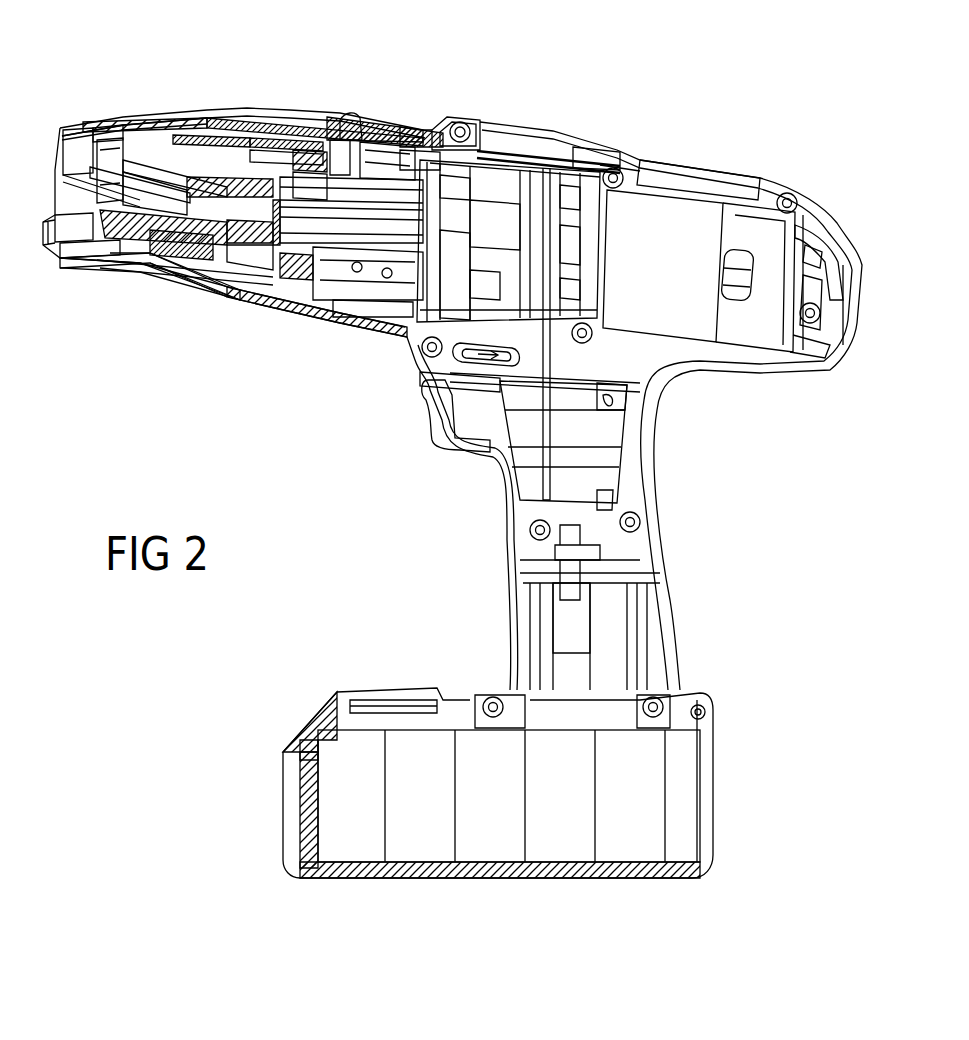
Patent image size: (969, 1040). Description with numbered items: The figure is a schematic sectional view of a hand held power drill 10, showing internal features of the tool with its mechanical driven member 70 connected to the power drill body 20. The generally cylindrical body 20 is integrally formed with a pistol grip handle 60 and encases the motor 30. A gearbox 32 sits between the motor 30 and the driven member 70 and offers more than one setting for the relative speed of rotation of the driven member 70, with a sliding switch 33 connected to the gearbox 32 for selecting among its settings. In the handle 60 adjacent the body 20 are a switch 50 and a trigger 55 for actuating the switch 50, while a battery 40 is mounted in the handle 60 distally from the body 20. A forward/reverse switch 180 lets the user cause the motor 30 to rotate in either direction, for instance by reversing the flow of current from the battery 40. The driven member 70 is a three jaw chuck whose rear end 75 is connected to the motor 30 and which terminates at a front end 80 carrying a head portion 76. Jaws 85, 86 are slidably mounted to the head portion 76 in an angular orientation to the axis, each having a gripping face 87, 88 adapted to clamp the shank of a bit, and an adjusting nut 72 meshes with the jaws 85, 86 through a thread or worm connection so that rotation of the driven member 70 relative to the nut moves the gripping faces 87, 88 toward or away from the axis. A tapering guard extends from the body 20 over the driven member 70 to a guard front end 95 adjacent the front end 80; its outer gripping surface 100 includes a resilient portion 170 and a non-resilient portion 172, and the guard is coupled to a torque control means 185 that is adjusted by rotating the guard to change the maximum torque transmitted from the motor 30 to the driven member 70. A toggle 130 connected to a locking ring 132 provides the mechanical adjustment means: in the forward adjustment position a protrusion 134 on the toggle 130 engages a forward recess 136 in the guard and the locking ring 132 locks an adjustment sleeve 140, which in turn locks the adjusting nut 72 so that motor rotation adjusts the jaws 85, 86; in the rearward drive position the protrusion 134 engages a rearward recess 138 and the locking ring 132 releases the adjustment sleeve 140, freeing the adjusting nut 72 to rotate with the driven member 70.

The power drill 10 is at (742, 130).
The power drill body 20 is at (630, 162).
The motor 30 is at (676, 276).
The gearbox 32 is at (502, 256).
The sliding switch 33 is at (518, 145).
The battery 40 is at (685, 795).
The switch 50 is at (598, 470).
The trigger 55 is at (455, 440).
The pistol grip handle 60 is at (505, 540).
The driven member 70 is at (200, 130).
The adjusting nut 72 is at (185, 260).
The rear end 75 is at (415, 245).
The head portion 76 is at (133, 245).
The front end 80 is at (50, 180).
The jaw 85 is at (110, 190).
The jaw 86 is at (112, 262).
The gripping face 87 is at (90, 165).
The gripping face 88 is at (85, 240).
The front end of the guard 95 is at (48, 240).
The gripping surface 100 is at (240, 130).
The toggle 130 is at (348, 108).
The locking ring 132 is at (302, 305).
The protrusion 134 is at (280, 135).
The forward recess 136 is at (262, 130).
The rearward recess 138 is at (298, 92).
The adjustment sleeve 140 is at (232, 305).
The resilient portion 170 is at (150, 118).
The non-resilient portion 172 is at (120, 285).
The forward/reverse switch 180 is at (430, 408).
The torque control means 185 is at (412, 130).